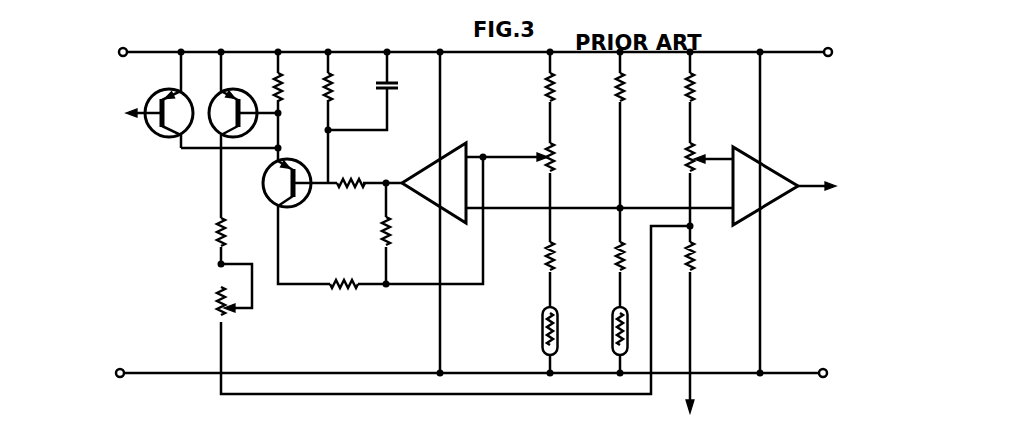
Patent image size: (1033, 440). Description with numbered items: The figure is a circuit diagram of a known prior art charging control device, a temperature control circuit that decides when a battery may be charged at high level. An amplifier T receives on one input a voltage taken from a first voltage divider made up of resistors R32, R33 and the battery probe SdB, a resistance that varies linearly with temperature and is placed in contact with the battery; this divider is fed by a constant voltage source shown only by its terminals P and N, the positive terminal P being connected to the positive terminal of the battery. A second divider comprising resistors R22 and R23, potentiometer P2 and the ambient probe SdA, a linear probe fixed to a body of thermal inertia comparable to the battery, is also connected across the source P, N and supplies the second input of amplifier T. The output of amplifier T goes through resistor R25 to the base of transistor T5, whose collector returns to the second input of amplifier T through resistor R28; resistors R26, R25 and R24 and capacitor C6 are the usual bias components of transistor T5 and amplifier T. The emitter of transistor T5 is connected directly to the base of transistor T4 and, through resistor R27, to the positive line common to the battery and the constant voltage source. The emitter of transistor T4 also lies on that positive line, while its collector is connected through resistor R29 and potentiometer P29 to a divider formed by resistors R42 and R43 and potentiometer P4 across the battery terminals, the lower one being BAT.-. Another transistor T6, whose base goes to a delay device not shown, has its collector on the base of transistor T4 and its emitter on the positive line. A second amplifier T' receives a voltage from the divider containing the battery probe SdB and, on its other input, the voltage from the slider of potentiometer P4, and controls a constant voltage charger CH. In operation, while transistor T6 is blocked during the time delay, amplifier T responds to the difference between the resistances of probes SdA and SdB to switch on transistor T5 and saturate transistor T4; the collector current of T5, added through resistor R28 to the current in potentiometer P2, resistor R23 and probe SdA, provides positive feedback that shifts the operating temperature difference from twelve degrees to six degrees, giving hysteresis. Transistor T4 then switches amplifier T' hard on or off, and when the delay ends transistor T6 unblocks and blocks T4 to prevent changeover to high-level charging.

The transistor T6 is at (171, 82).
The transistor T4 is at (220, 84).
The transistor T5 is at (263, 192).
The resistor R27 is at (276, 86).
The resistor R24 is at (350, 86).
The capacitor C6 is at (398, 83).
The resistor R25 is at (346, 176).
The resistor R26 is at (378, 243).
The resistor R28 is at (344, 288).
The resistor R29 is at (211, 240).
The potentiometer P29 is at (209, 306).
The amplifier T is at (434, 177).
The resistor R22 is at (546, 86).
The potentiometer P2 is at (560, 167).
The resistor R23 is at (540, 262).
The ambient temperature probe SdA is at (539, 338).
The resistor R32 is at (616, 86).
The resistor R33 is at (614, 262).
The battery probe SdB is at (610, 338).
The resistor R42 is at (687, 86).
The potentiometer P4 is at (684, 166).
The resistor R43 is at (694, 266).
The second amplifier T' is at (765, 179).
The constant voltage charger CH is at (819, 174).
The positive terminal P is at (829, 76).
The negative terminal N is at (831, 384).
The battery negative terminal BAT.- is at (716, 403).